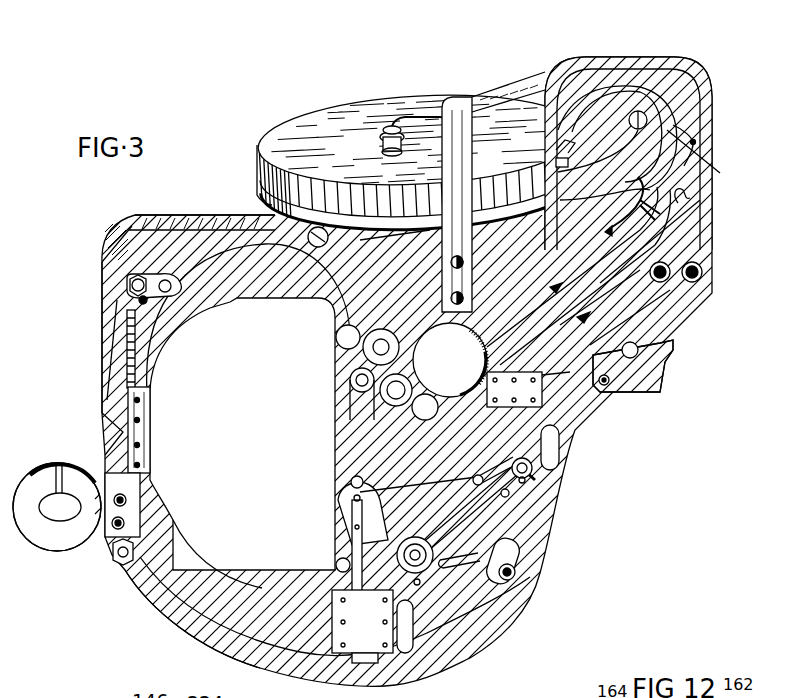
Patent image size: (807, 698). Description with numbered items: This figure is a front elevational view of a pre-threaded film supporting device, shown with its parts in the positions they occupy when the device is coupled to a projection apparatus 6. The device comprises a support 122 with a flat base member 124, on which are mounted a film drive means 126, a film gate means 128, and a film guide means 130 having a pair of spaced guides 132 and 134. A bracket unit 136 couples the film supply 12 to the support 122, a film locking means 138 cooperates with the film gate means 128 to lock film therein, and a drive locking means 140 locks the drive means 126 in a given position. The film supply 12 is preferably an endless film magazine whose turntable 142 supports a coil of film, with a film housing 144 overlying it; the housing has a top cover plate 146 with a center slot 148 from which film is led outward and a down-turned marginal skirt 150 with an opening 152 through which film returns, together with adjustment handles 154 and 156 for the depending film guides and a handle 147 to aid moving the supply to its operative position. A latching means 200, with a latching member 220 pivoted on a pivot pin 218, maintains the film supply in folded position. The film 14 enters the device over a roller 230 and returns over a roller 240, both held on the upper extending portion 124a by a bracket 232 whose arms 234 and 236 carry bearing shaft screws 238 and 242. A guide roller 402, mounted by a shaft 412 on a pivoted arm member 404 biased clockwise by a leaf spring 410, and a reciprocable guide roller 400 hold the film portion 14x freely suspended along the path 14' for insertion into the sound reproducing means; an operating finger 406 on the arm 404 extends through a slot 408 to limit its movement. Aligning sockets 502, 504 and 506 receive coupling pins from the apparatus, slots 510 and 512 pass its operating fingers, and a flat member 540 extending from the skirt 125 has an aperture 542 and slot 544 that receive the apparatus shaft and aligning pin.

The frame 6 is at (165, 637).
The film supply means 12 is at (410, 148).
The film 14 is at (578, 276).
The web path arc 14' is at (248, 318).
The portion of film 14x is at (400, 488).
The support 122 is at (128, 238).
The flat base member 124 is at (208, 232).
The upper extending portion 124a is at (687, 97).
The skirt 125 is at (160, 218).
The film drive means 126 is at (335, 378).
The film gate means 128 is at (160, 432).
The film guide means 130 is at (338, 452).
The guide 132 is at (358, 478).
The guide 134 is at (483, 405).
The bracket means 136 is at (428, 241).
The film locking means 138 is at (140, 332).
The drive locking means 140 is at (640, 322).
The turntable 142 is at (353, 220).
The film housing 144 is at (382, 92).
The top cover plate 146 is at (415, 105).
The handle 147 is at (490, 108).
The slot 148 is at (403, 133).
The marginal skirt 150 is at (257, 143).
The opening 152 is at (320, 177).
The adjustment handle 154 is at (447, 186).
The adjustment handle 156 is at (565, 150).
The latching means 200 is at (533, 568).
The pivot pin 218 is at (503, 538).
The latching member 220 is at (483, 555).
The roller 230 is at (673, 127).
The bracket 232 is at (696, 145).
The arm 234 is at (715, 160).
The arm 236 is at (678, 203).
The bearing shaft screw 238 is at (638, 118).
The roller 240 is at (660, 214).
The bearing shaft screw 242 is at (607, 236).
The guide roller 400 is at (340, 523).
The guide roller 402 is at (510, 462).
The pivoted arm member 404 is at (467, 503).
The operating finger 406 is at (417, 588).
The slot 408 is at (426, 568).
The leaf spring 410 is at (457, 513).
The shaft 412 is at (522, 405).
The aligning socket 502 is at (147, 275).
The aligning socket 504 is at (123, 560).
The aligning socket 506 is at (640, 342).
The slot 510 is at (413, 643).
The slot 512 is at (572, 443).
The flat member 540 is at (36, 560).
The aperture 542 is at (60, 527).
The slot 544 is at (58, 490).